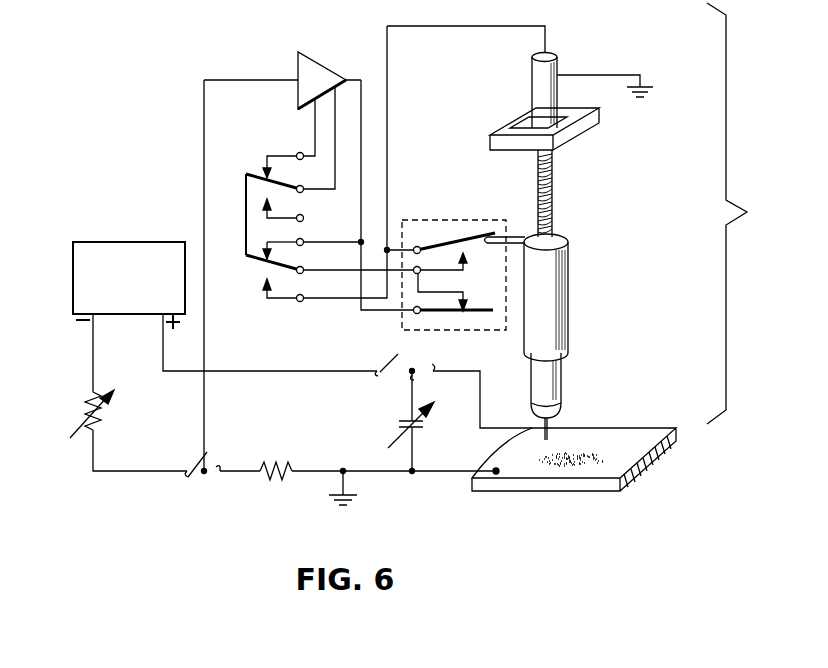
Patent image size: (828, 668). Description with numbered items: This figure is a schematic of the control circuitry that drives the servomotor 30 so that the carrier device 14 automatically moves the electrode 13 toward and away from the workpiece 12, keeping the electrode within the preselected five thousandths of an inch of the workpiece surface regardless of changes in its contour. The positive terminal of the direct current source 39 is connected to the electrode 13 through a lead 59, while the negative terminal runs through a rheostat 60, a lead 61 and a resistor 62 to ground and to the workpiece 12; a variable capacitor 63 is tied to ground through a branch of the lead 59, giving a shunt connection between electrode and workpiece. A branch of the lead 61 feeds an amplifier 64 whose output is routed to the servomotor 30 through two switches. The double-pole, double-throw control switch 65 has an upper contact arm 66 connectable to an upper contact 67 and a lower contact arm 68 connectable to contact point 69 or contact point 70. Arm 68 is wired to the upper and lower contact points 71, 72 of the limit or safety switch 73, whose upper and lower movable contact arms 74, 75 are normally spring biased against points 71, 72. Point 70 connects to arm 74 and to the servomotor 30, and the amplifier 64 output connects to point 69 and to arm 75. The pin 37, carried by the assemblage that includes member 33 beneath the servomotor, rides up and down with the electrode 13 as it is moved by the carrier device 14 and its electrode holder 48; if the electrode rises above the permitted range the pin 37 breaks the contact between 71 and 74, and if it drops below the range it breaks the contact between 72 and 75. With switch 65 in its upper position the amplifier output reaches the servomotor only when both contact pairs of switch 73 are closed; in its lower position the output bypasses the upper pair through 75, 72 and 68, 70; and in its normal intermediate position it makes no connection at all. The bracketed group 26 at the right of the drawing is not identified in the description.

The workpiece 12 is at (510, 492).
The electrode 13 is at (550, 433).
The carrier device 14 is at (568, 328).
The electrode positioning assembly 26 is at (741, 213).
The servomotor 30 is at (558, 62).
The assemblage 33 is at (576, 137).
The pin 37 is at (518, 232).
The direct current source 39 is at (131, 242).
The electrode holder 48 is at (562, 376).
The lead 59 is at (432, 360).
The rheostat 60 is at (103, 419).
The lead 61 is at (209, 477).
The resistor 62 is at (274, 466).
The variable capacitor 63 is at (424, 429).
The amplifier 64 is at (317, 64).
The double-pole, double-throw control switch 65 is at (246, 189).
The upper contact arm 66 is at (256, 170).
The upper contact 67 is at (292, 154).
The lower contact arm 68 is at (256, 266).
The contact point 69 is at (301, 241).
The contact point 70 is at (286, 300).
The upper contact point 71 is at (466, 274).
The lower contact point 72 is at (468, 292).
The limit or safety switch 73 is at (430, 218).
The upper movable contact arm 74 is at (450, 243).
The lower movable contact arm 75 is at (458, 314).